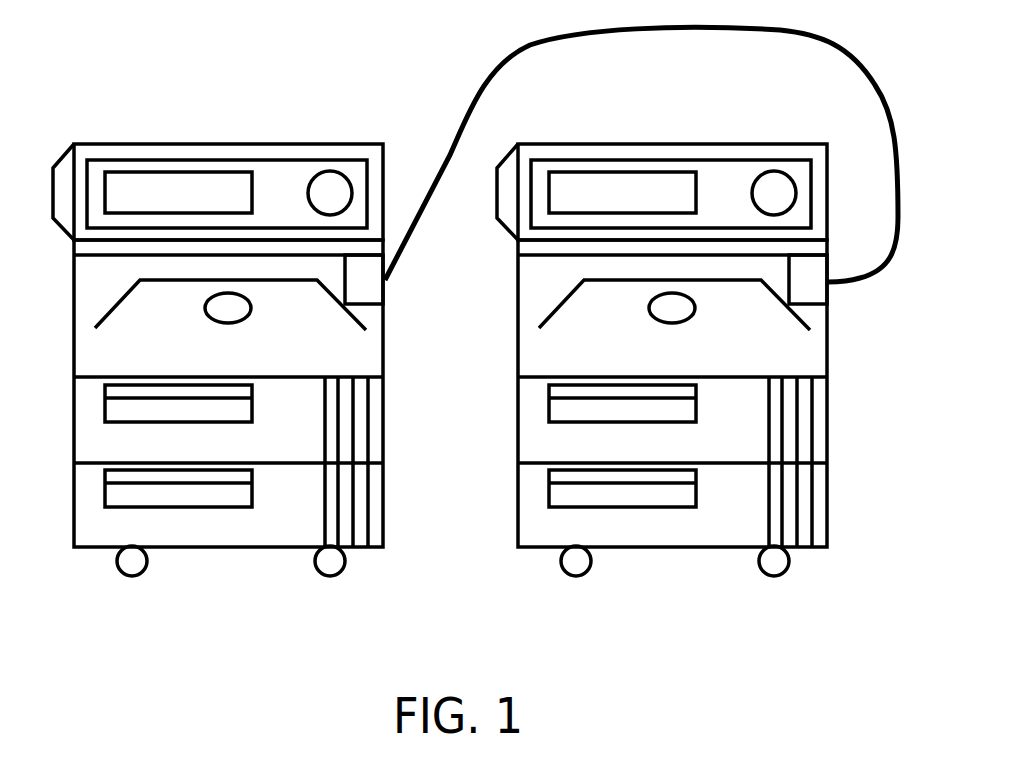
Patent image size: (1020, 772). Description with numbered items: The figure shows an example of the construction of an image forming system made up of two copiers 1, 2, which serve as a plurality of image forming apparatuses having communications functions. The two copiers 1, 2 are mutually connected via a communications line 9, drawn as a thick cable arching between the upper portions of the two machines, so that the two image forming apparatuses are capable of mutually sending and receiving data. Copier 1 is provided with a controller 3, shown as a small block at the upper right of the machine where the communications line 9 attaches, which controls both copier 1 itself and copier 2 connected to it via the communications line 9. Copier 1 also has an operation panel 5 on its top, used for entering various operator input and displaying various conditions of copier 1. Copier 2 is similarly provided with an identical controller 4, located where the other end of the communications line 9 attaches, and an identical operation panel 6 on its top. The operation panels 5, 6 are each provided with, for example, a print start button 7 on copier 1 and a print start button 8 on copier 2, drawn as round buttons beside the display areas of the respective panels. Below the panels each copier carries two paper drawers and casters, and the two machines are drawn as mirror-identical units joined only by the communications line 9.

The copier 1 is at (402, 472).
The copier 2 is at (846, 472).
The controller 3 is at (368, 298).
The controller 4 is at (813, 298).
The operation panel 5 is at (181, 162).
The operation panel 6 is at (625, 162).
The print start button 7 is at (337, 187).
The print start button 8 is at (779, 185).
The communications line 9 is at (836, 56).